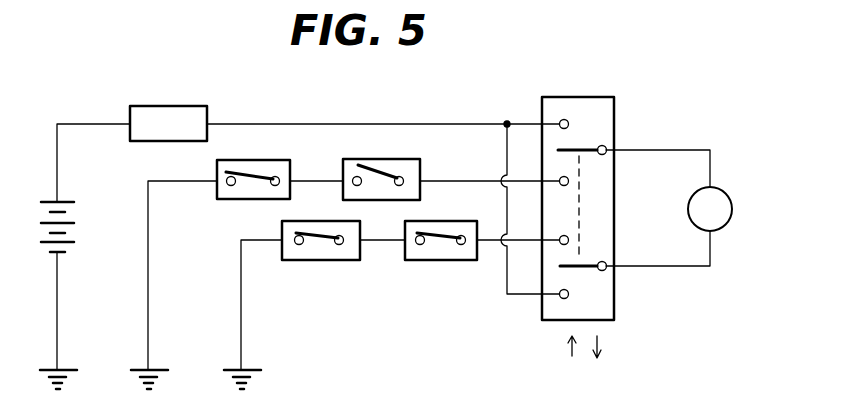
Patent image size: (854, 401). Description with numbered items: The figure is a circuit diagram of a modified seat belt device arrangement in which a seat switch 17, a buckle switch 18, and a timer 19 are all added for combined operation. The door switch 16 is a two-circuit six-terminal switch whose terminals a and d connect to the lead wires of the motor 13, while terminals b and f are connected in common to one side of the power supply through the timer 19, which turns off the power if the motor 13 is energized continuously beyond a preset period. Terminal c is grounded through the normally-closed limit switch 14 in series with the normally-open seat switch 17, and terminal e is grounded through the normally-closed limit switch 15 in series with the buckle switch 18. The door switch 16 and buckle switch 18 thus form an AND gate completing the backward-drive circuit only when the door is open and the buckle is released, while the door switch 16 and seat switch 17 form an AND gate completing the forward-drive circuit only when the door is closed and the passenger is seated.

The motor 13 is at (728, 216).
The limit switch 14 is at (256, 166).
The limit switch 15 is at (448, 253).
The door switch 16 is at (585, 107).
The seat switch 17 is at (392, 167).
The buckle switch 18 is at (333, 255).
The timer 19 is at (173, 113).